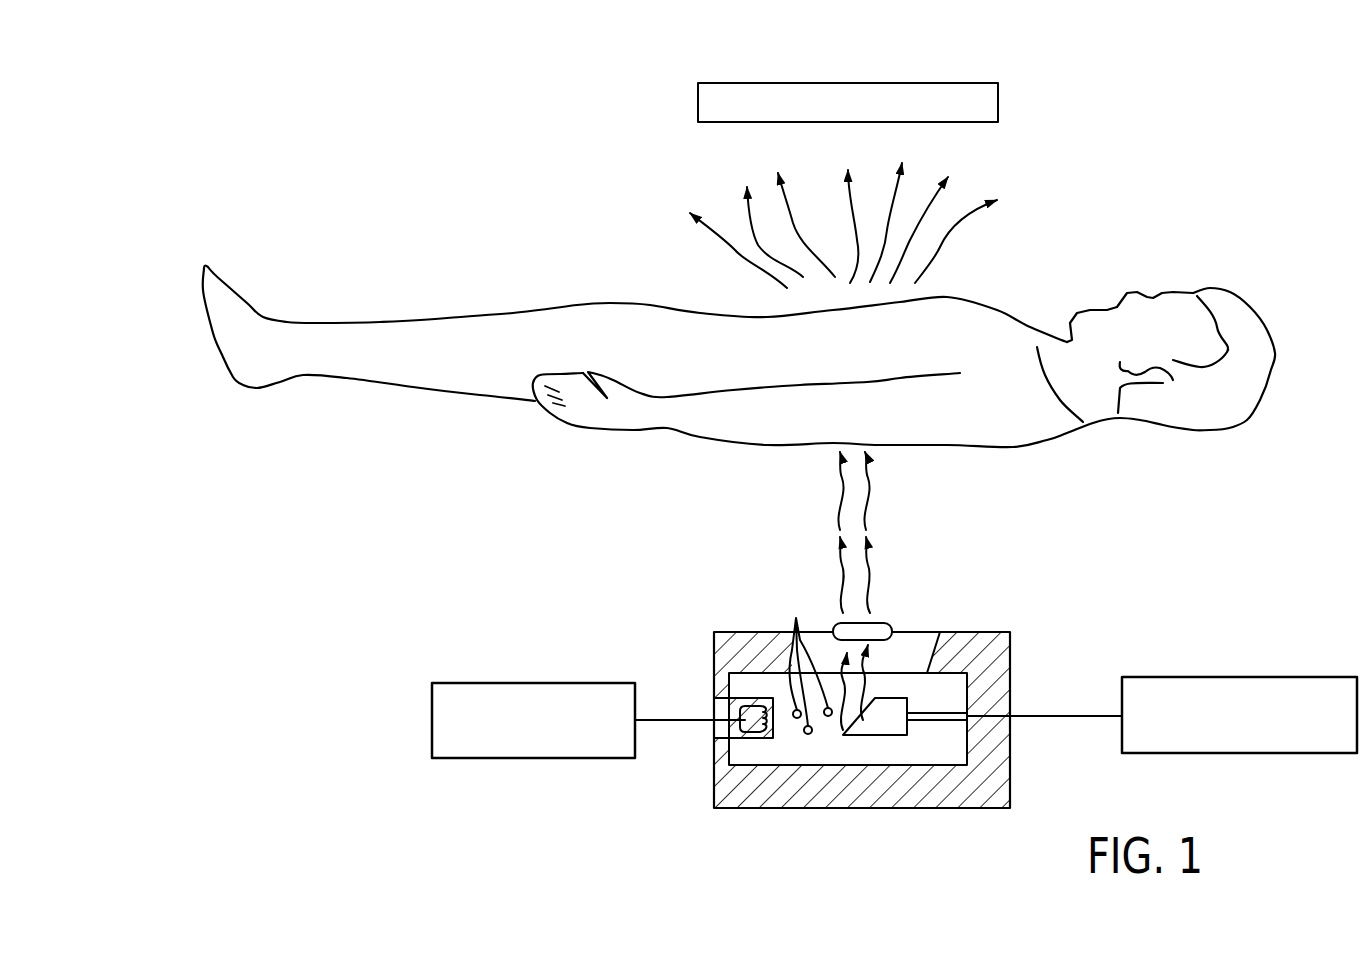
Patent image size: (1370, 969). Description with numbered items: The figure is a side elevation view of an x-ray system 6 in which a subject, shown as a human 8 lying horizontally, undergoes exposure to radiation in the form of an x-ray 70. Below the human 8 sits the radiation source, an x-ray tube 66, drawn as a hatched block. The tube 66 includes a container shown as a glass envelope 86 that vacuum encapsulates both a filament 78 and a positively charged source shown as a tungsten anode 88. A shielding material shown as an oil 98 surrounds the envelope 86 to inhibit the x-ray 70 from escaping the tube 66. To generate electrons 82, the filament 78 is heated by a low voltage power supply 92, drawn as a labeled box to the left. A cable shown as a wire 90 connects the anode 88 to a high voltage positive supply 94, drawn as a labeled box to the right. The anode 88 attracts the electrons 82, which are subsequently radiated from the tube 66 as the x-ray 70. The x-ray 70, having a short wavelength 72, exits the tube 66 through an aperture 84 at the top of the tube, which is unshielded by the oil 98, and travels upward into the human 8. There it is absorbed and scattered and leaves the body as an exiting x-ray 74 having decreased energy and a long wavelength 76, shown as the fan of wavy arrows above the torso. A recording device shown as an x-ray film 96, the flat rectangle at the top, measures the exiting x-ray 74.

The x-ray system 6 is at (288, 100).
The human 8 is at (1282, 333).
The x-ray tube 66 is at (847, 676).
The x-ray 70 is at (881, 532).
The short wavelength 72 is at (833, 498).
The exiting x-ray 74 is at (898, 213).
The long wavelength 76 is at (857, 240).
The filament 78 is at (742, 710).
The electrons 82 is at (804, 661).
The aperture 84 is at (883, 622).
The glass envelope 86 is at (890, 767).
The tungsten anode 88 is at (903, 702).
The wire 90 is at (687, 720).
The low voltage power supply 92 is at (432, 720).
The high voltage positive supply 94 is at (1235, 677).
The x-ray film 96 is at (998, 100).
The oil 98 is at (782, 793).